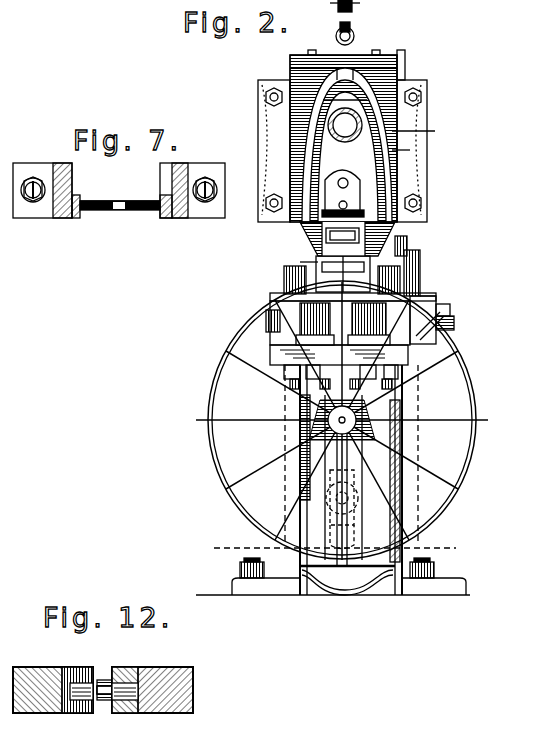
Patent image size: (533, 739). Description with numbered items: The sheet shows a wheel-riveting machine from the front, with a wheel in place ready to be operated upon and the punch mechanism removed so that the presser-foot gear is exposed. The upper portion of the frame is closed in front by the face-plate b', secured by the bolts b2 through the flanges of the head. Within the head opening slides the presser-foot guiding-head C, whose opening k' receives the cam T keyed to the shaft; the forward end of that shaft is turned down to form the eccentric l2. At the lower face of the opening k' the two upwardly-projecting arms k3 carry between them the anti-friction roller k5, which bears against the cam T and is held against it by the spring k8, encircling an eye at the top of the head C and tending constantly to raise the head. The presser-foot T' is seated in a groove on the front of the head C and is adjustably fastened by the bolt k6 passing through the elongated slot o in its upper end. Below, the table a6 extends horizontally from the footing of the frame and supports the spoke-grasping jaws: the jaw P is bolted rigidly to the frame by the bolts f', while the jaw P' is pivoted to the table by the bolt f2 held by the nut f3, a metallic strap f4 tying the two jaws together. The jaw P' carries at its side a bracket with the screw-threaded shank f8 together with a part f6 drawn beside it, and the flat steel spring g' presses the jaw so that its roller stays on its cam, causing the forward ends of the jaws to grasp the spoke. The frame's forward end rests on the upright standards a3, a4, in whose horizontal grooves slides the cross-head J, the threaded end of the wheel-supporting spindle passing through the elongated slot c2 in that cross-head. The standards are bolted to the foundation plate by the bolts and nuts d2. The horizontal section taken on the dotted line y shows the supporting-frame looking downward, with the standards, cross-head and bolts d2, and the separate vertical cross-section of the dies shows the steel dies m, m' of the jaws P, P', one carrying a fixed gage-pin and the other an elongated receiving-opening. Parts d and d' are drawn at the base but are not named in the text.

In FIG. 2, the bolt k6 is at (352, 6).
In FIG. 2, the spring k8 is at (355, 34).
In FIG. 2, the presser-foot guiding-head C is at (333, 136).
In FIG. 2, the upwardly-projecting arms k3 is at (343, 193).
In FIG. 2, the bolts b2 is at (260, 88).
In FIG. 2, the face-plate b' is at (426, 151).
In FIG. 2, the opening k' is at (332, 104).
In FIG. 2, the cam T is at (420, 131).
In FIG. 2, the eccentric l2 is at (410, 152).
In FIG. 2, the anti-friction roller k5 is at (324, 233).
In FIG. 2, the presser-foot T' is at (278, 250).
In FIG. 2, the elongated slot o is at (407, 250).
In FIG. 2, the bolt f2 is at (314, 266).
In FIG. 2, the nut f3 is at (283, 274).
In FIG. 2, the metallic strap f4 is at (415, 300).
In FIG. 2, the spoke-grasping jaw P is at (343, 319).
In FIG. 12, the spoke-grasping jaw P is at (53, 681).
In FIG. 2, the spoke-grasping jaw P' is at (441, 286).
In FIG. 12, the spoke-grasping jaw P' is at (152, 680).
In FIG. 2, the bolts f' is at (254, 321).
In FIG. 2, the valve f6 is at (450, 306).
In FIG. 2, the screw-threaded shank f8 is at (454, 322).
In FIG. 2, the flat steel spring g' is at (447, 330).
In FIG. 2, the table a6 is at (272, 352).
In FIG. 2, the upright standard a3 is at (300, 494).
In FIG. 2, the upright standard a4 is at (411, 480).
In FIG. 2, the elongated slot c2 is at (402, 465).
In FIG. 7, the elongated slot c2 is at (118, 212).
In FIG. 2, the cross-head J is at (354, 526).
In FIG. 7, the cross-head J is at (140, 211).
In FIG. 2, the dotted line y is at (339, 550).
In FIG. 2, the foot d is at (251, 576).
In FIG. 2, the foot brace d' is at (347, 591).
In FIG. 7, the bolts and nuts d2 is at (33, 205).
In FIG. 12, the steel die m is at (77, 681).
In FIG. 12, the steel die m' is at (116, 675).